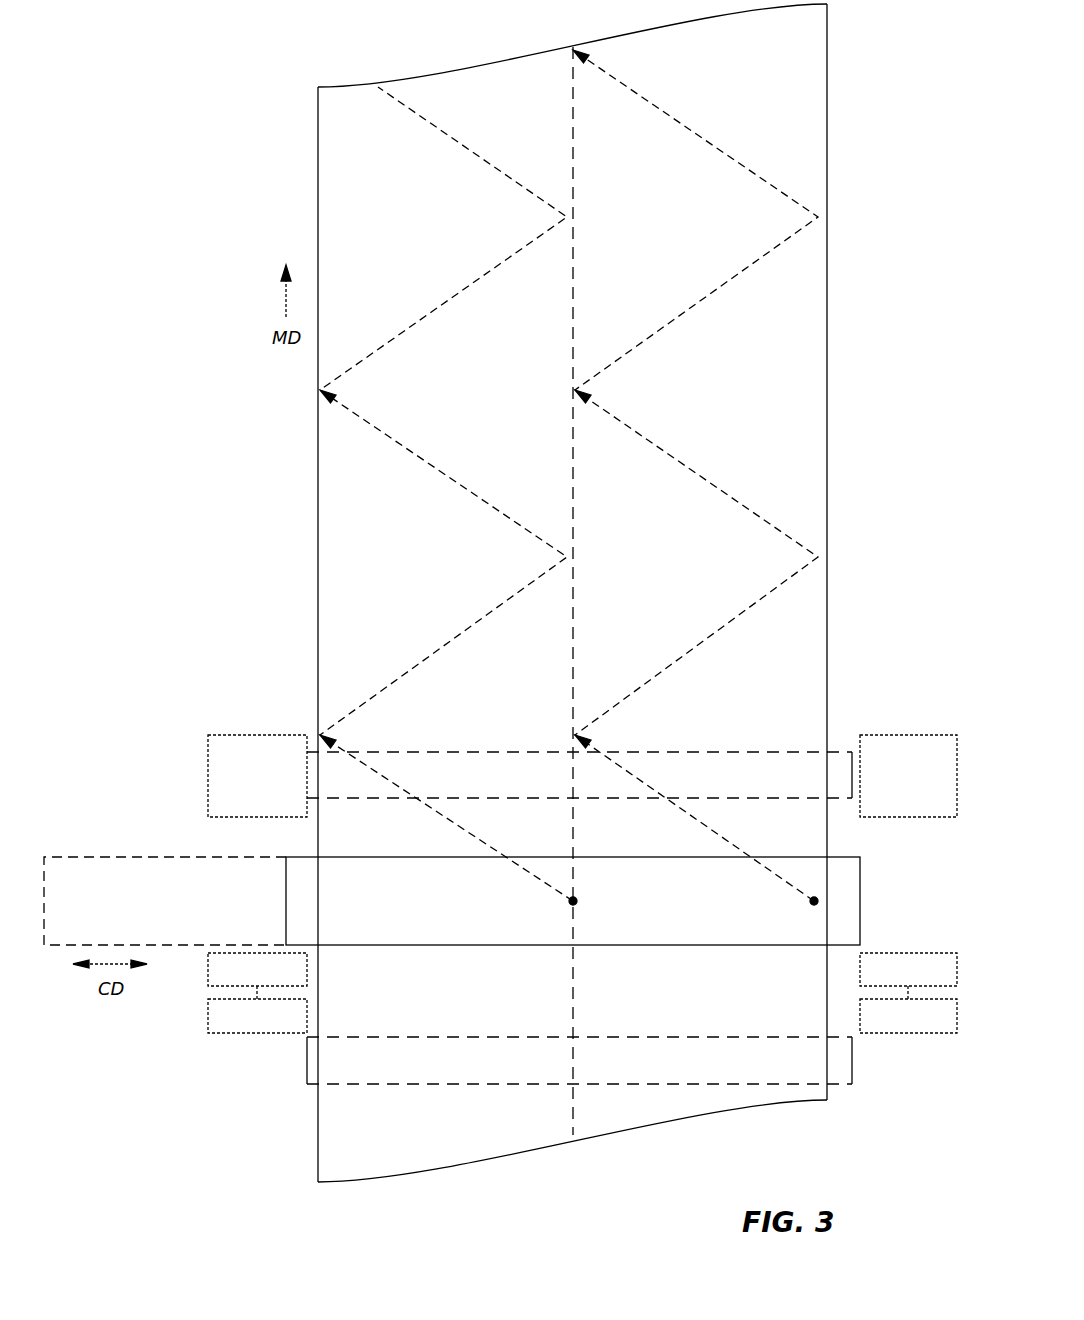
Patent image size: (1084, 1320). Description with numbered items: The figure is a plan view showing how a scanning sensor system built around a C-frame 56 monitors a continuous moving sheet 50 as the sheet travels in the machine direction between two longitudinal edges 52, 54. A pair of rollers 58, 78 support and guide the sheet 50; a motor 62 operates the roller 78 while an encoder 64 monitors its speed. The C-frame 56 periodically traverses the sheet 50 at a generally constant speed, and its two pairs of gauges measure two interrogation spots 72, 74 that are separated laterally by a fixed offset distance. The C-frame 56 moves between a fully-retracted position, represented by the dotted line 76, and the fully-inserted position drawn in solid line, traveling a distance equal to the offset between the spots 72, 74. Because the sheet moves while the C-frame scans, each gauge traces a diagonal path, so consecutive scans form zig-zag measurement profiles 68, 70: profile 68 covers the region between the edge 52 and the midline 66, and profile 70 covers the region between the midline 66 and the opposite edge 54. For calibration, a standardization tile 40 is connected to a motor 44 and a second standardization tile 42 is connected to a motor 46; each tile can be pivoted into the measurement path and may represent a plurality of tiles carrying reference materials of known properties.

The standardization tile 40 is at (208, 978).
The standardization tile 42 is at (882, 950).
The motor 44 is at (208, 1027).
The motor 46 is at (880, 1033).
The sheet 50 is at (347, 125).
The longitudinal edge 52 is at (318, 522).
The longitudinal edge 54 is at (828, 233).
The C-frame 56 is at (410, 914).
The roller 58 is at (306, 1070).
The motor 62 is at (246, 802).
The encoder 64 is at (897, 802).
The midline 66 is at (580, 280).
The measurement profile 68 is at (688, 656).
The measurement profile 70 is at (433, 656).
The interrogation spot 72 is at (793, 906).
The interrogation spot 74 is at (553, 906).
The fully-retracted position 76 is at (205, 857).
The roller 78 is at (487, 752).